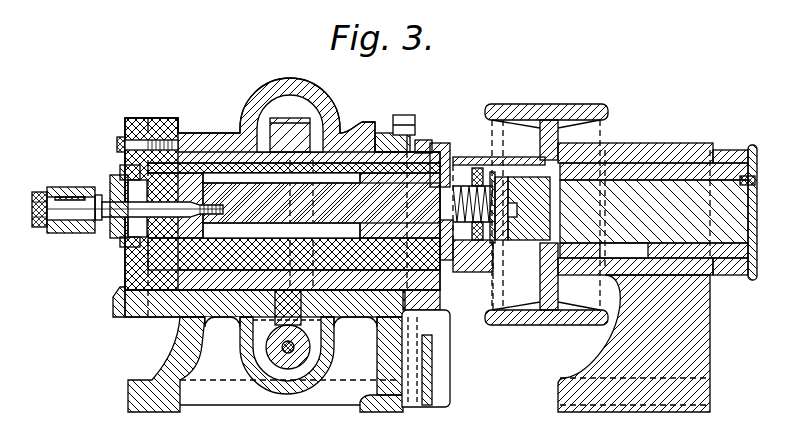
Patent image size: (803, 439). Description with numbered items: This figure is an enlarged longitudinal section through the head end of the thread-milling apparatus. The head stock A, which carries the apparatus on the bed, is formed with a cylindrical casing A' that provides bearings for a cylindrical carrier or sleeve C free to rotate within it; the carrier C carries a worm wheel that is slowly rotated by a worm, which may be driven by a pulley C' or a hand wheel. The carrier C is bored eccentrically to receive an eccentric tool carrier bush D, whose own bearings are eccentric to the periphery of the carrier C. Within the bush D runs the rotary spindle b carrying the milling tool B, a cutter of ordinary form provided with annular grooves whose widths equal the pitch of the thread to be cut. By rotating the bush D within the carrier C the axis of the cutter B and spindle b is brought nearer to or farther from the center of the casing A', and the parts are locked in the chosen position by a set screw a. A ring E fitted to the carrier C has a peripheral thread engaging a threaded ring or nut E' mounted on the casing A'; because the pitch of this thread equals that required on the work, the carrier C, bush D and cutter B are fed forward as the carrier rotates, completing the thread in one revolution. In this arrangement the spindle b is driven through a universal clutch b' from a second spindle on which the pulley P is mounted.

The head stock A is at (657, 265).
The cylindrical casing A' is at (265, 226).
The milling tool B is at (75, 178).
The cylindrical carrier or sleeve C is at (276, 212).
The pulley C' is at (287, 362).
The eccentric tool carrier bush D is at (205, 158).
The ring E is at (427, 250).
The threaded ring or nut E' is at (377, 217).
The pulley P is at (540, 110).
The set screw a is at (116, 145).
The rotary spindle b is at (321, 205).
The universal clutch b' is at (501, 235).